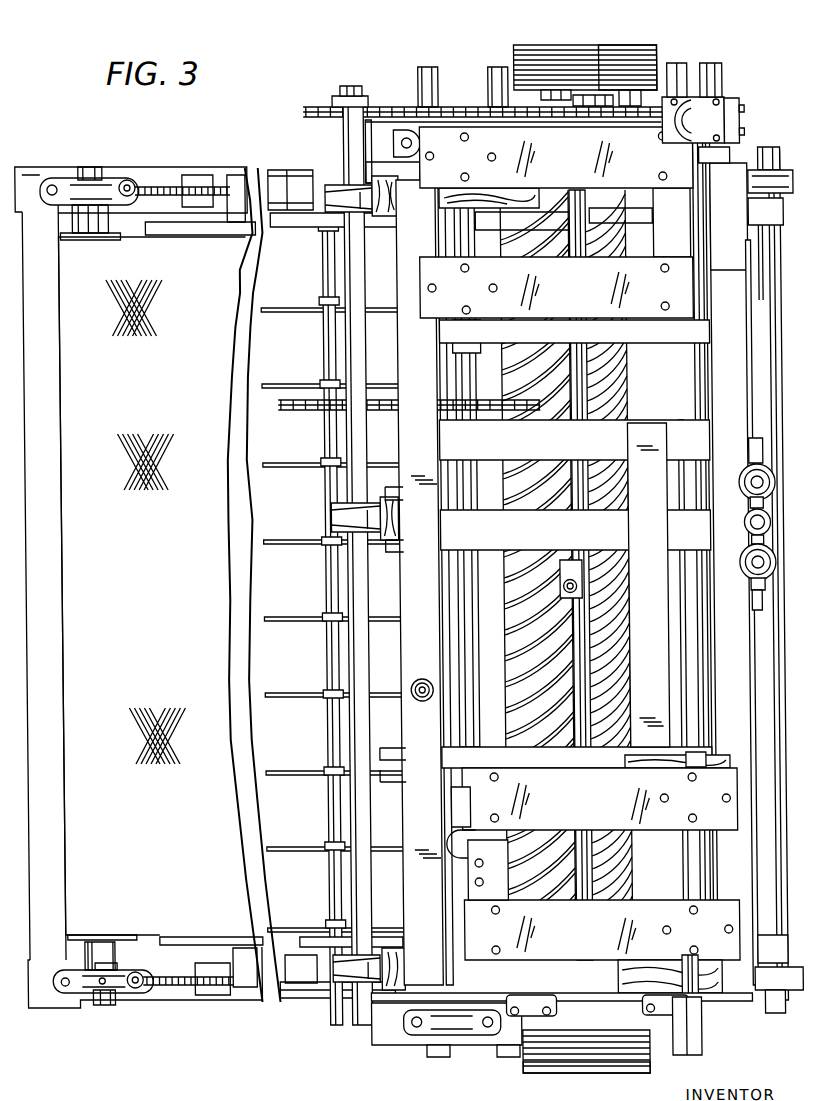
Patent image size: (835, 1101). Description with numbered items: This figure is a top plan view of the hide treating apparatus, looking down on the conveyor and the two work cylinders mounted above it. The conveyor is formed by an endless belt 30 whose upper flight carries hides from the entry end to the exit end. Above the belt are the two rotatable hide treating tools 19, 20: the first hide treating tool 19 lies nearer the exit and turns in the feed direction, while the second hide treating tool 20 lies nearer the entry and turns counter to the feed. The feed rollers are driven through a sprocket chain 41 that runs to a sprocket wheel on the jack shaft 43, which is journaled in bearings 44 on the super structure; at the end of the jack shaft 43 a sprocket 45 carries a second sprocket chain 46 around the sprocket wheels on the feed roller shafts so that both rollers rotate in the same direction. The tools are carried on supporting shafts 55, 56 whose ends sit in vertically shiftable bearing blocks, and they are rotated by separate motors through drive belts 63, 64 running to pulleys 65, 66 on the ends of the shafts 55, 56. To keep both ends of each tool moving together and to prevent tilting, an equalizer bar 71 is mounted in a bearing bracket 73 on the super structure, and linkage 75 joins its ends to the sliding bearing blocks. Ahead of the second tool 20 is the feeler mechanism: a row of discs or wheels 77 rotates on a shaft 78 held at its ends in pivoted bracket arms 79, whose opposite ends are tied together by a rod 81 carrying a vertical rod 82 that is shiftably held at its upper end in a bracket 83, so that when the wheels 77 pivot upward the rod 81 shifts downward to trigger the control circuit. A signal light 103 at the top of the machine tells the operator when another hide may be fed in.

The first hide treating tool 19 is at (626, 882).
The second hide treating tool 20 is at (550, 898).
The endless belt 30 is at (205, 517).
The sprocket chain 41 is at (406, 398).
The jack shaft 43 is at (345, 150).
The bearings 44 is at (342, 972).
The sprocket 45 is at (315, 106).
The sprocket chain 46 is at (376, 107).
The supporting shaft 55 is at (633, 100).
The supporting shaft 56 is at (551, 1017).
The drive belt 63 is at (566, 43).
The drive belt 64 is at (579, 1073).
The pulley 65 is at (636, 45).
The pulley 66 is at (522, 1078).
The equalizer bar 71 is at (764, 722).
The bearing bracket 73 is at (782, 987).
The linkage 75 is at (766, 218).
The discs or wheels 77 is at (281, 316).
The shaft 78 is at (319, 289).
The bracket arms 79 is at (309, 218).
The rod 81 is at (565, 252).
The vertical rod 82 is at (556, 587).
The bracket 83 is at (564, 560).
The light 103 is at (410, 701).